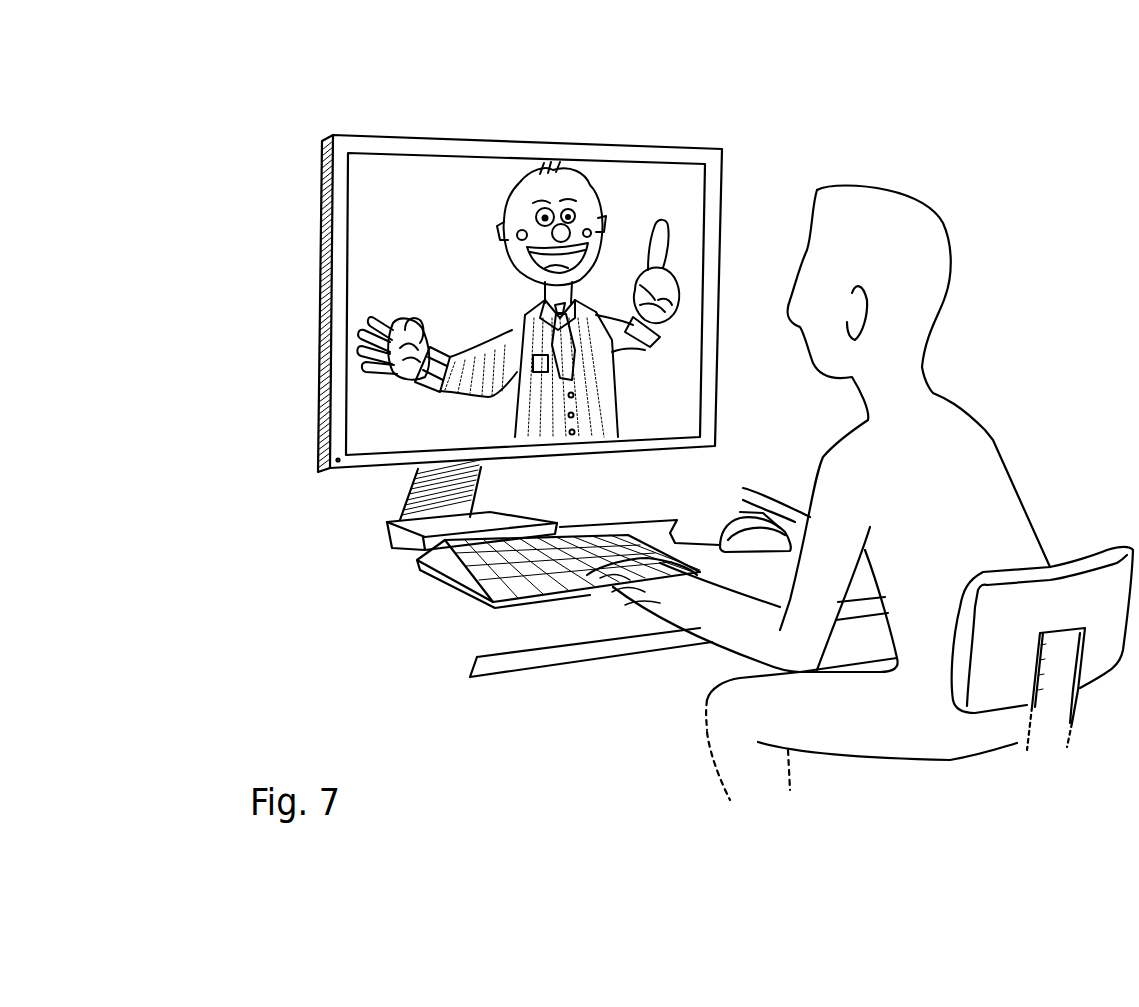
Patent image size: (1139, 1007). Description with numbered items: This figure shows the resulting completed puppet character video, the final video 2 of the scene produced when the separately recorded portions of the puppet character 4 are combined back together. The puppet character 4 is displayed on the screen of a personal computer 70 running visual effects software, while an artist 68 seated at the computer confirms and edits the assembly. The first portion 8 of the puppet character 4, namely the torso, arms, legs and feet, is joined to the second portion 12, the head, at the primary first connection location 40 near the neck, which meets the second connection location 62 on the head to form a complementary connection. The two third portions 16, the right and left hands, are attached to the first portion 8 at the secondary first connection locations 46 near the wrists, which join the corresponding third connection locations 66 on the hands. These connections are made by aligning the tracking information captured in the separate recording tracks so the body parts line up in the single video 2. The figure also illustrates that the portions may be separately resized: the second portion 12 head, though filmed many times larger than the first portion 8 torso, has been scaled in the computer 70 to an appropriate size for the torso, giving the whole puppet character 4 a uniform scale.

The final video 2 is at (532, 288).
The puppet character 4 is at (382, 267).
The first portion 8 is at (620, 405).
The second portion 12 is at (550, 172).
The third portion 16 is at (541, 294).
The primary first connection location 40 is at (557, 285).
The second connection location 62 is at (557, 285).
The secondary first connection locations 46 is at (389, 437).
The third connection location 66 is at (408, 385).
The artist 68 is at (938, 313).
The personal computer 70 is at (702, 148).